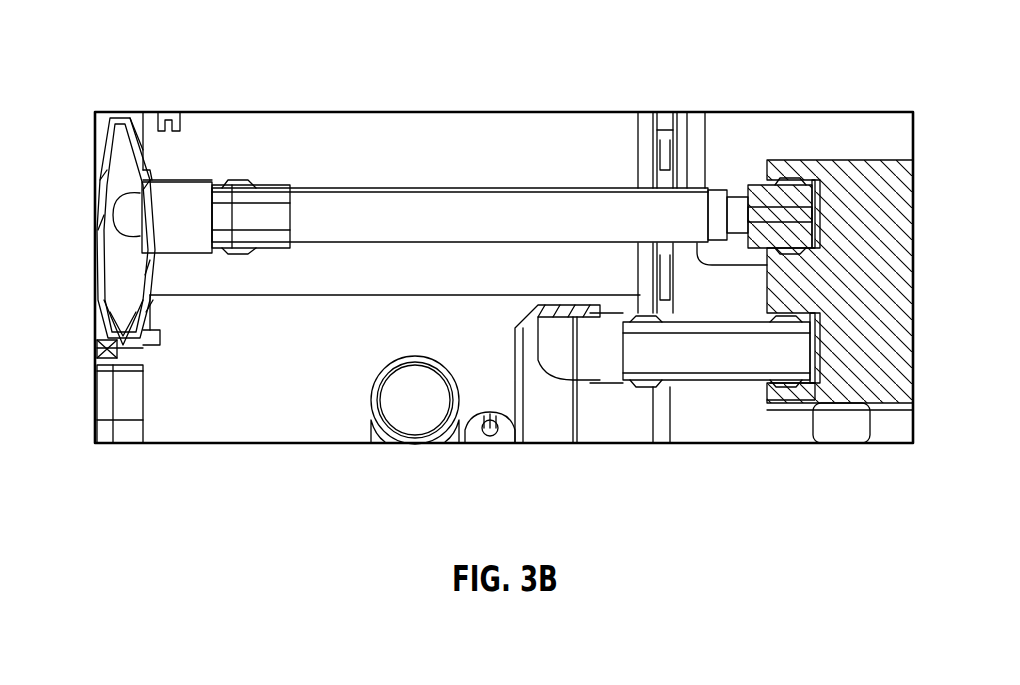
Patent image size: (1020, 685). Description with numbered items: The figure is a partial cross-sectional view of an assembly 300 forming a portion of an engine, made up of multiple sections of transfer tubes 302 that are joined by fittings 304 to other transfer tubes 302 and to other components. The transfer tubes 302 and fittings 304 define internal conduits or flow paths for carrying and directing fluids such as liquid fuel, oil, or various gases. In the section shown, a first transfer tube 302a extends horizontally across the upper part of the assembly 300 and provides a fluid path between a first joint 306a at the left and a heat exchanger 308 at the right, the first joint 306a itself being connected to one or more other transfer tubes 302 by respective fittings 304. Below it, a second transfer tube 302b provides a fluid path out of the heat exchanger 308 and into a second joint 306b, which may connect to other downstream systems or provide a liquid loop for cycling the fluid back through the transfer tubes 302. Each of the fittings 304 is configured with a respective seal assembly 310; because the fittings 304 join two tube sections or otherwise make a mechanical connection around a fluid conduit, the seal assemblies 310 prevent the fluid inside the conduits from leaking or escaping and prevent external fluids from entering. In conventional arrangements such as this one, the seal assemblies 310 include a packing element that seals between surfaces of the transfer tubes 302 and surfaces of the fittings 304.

The assembly 300 is at (188, 44).
The transfer tubes 302 is at (130, 420).
The first transfer tube 302a is at (445, 205).
The second transfer tube 302b is at (700, 360).
The fittings 304 is at (762, 185).
The first joint 306a is at (107, 248).
The second joint 306b is at (548, 375).
The heat exchanger 308 is at (857, 185).
The seal assemblies 310 is at (240, 172).